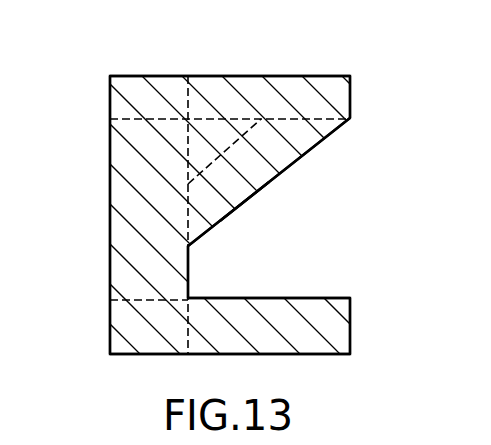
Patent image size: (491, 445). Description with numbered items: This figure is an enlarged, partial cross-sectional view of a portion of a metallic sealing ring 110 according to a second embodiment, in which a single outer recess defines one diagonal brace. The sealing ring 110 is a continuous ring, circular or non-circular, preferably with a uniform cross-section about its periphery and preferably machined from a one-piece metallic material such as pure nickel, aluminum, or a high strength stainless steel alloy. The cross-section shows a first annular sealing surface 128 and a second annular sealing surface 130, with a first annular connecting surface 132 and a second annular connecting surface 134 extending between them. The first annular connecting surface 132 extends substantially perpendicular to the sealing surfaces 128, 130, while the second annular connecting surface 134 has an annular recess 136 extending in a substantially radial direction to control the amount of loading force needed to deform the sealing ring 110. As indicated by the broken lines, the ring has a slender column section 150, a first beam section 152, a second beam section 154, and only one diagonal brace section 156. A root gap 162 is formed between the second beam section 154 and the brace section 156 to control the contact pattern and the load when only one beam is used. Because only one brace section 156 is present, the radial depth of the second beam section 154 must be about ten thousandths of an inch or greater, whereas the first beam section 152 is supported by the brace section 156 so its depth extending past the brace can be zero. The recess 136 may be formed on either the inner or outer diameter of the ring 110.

The metallic sealing ring 110 is at (80, 126).
The first annular sealing surface 128 is at (325, 367).
The second annular sealing surface 130 is at (292, 76).
The first annular connecting surface 132 is at (110, 222).
The second annular connecting surface 134 is at (350, 87).
The annular recess 136 is at (290, 168).
The slender column section 150 is at (141, 181).
The first beam section 152 is at (334, 141).
The second beam section 154 is at (330, 298).
The diagonal brace section 156 is at (266, 202).
The root gap 162 is at (188, 268).